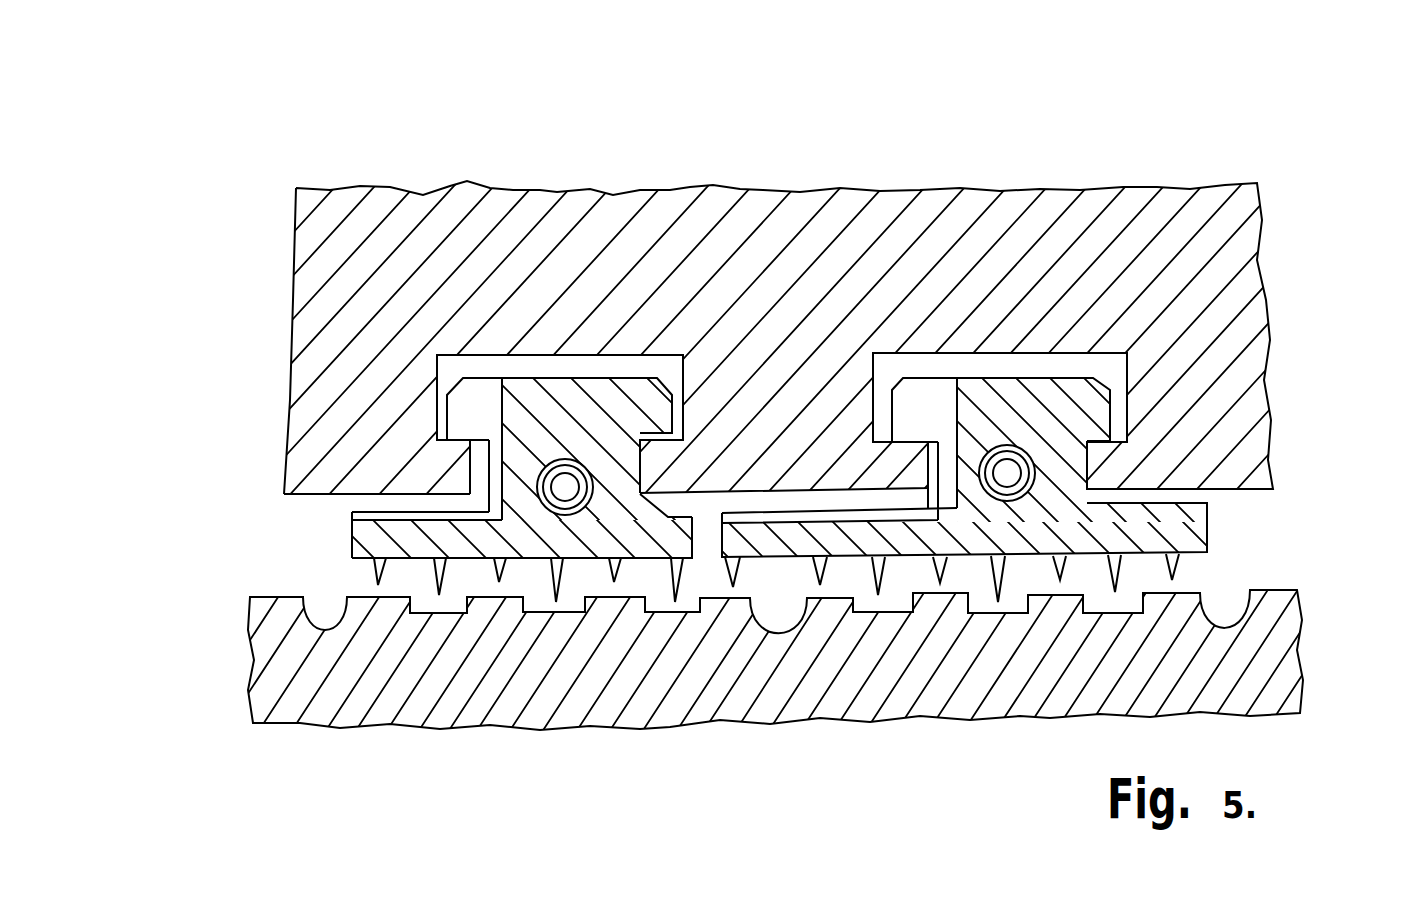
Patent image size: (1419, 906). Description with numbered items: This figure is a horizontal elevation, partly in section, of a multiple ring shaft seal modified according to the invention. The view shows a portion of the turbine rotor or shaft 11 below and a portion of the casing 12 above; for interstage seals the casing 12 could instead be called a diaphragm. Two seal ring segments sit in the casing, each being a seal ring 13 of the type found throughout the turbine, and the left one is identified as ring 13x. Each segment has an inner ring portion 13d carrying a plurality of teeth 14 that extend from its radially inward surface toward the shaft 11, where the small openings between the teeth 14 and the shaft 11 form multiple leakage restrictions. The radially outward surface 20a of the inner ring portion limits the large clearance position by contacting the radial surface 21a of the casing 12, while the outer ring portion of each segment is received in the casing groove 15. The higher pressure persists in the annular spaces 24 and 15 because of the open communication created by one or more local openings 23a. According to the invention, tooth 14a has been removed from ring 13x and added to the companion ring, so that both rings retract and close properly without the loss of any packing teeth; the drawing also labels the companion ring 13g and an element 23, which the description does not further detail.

The rotor 11 is at (1263, 617).
The casing 12 is at (1207, 195).
The seal ring 13 is at (1182, 520).
The inner ring portion 13d is at (376, 550).
The anchor body 13g is at (1030, 385).
The ring 13x is at (600, 405).
The teeth 14 is at (1000, 590).
The tooth 14a is at (730, 573).
The casing groove 15 is at (455, 362).
The radially outward surface 20a is at (412, 512).
The radial surface 21a is at (305, 491).
The thin web strip 23 is at (807, 517).
The local openings 23a is at (351, 523).
The annular space 24 is at (346, 501).